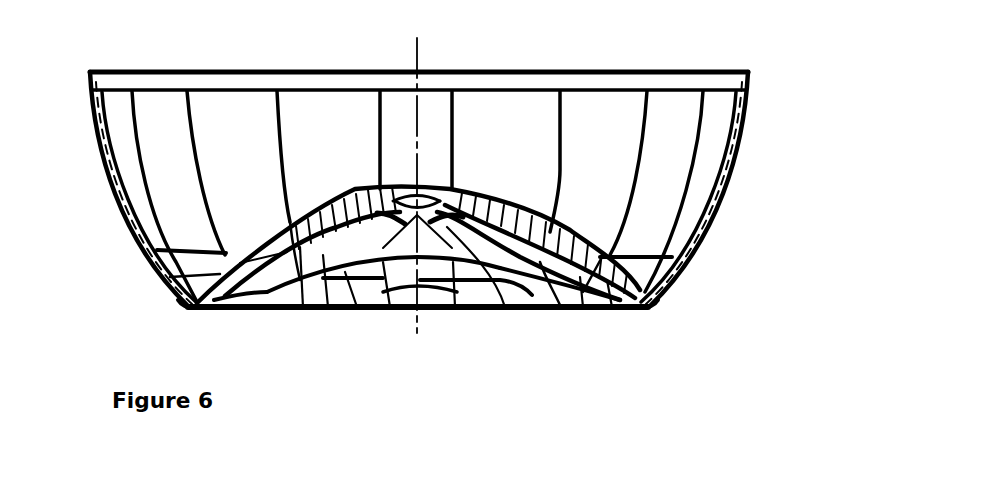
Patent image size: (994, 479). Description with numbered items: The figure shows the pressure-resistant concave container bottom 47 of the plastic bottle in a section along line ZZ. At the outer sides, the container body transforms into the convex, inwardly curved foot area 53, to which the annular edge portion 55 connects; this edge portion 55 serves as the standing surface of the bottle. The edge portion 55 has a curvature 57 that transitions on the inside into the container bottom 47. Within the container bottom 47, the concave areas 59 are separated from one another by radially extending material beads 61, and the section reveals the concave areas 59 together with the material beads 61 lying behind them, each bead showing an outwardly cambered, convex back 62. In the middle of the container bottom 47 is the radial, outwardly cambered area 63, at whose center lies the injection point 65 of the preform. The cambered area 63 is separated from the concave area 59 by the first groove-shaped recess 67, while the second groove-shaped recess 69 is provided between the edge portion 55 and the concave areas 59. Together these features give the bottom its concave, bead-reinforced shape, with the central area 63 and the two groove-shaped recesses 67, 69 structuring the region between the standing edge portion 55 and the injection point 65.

The container bottom 47 is at (445, 342).
The foot area 53 is at (712, 228).
The edge portion 55 is at (637, 309).
The curvature 57 is at (633, 313).
The concave areas 59 is at (300, 213).
The material beads 61 is at (392, 313).
The back 62 is at (328, 313).
The outwardly cambered area 63 is at (426, 188).
The injection point 65 is at (477, 313).
The first groove-shaped recess 67 is at (458, 198).
The second groove-shaped recess 69 is at (157, 270).